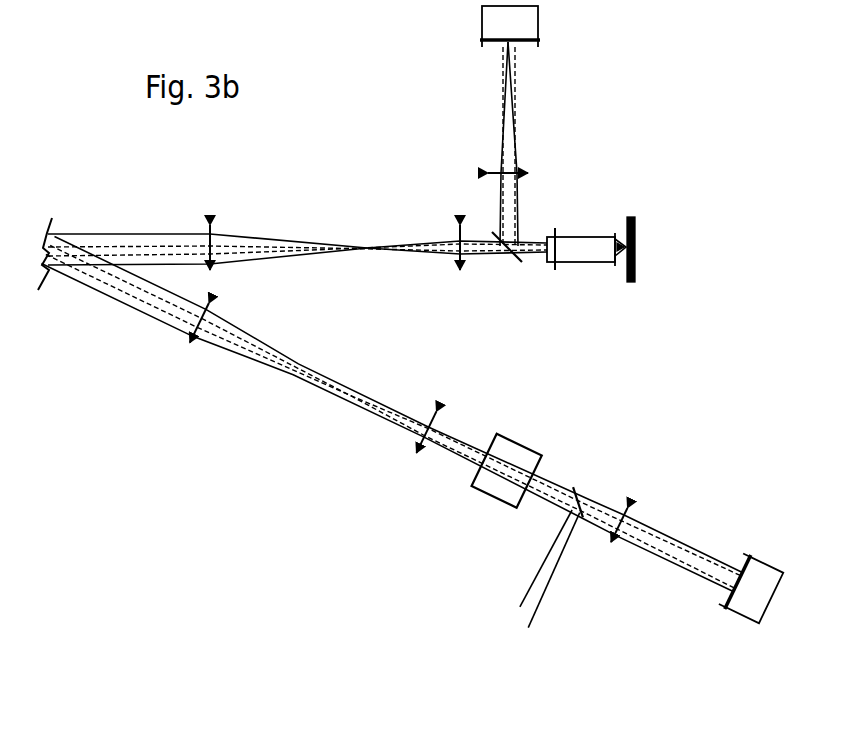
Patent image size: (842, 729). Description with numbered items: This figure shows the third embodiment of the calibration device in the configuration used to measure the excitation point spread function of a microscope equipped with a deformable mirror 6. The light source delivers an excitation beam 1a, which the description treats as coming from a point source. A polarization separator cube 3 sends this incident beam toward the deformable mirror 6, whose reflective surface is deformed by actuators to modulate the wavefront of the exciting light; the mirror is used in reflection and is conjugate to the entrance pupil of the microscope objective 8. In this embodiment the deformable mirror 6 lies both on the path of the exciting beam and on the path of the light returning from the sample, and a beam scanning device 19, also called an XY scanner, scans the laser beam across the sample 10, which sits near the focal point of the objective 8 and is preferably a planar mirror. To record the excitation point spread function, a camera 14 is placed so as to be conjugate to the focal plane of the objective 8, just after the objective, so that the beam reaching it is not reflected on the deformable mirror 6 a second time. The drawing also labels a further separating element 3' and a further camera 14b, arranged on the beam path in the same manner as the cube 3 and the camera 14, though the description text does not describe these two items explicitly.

The deformable mirror 6 is at (59, 295).
The camera 14 is at (464, 38).
The polarization separator cube 3 is at (506, 280).
The microscope objective 8 is at (586, 280).
The sample 10 is at (678, 249).
The beam scanning device 19 is at (524, 443).
The second beam splitter 3' is at (610, 471).
The excitation beam 1a is at (535, 562).
The second detector 14b is at (737, 548).